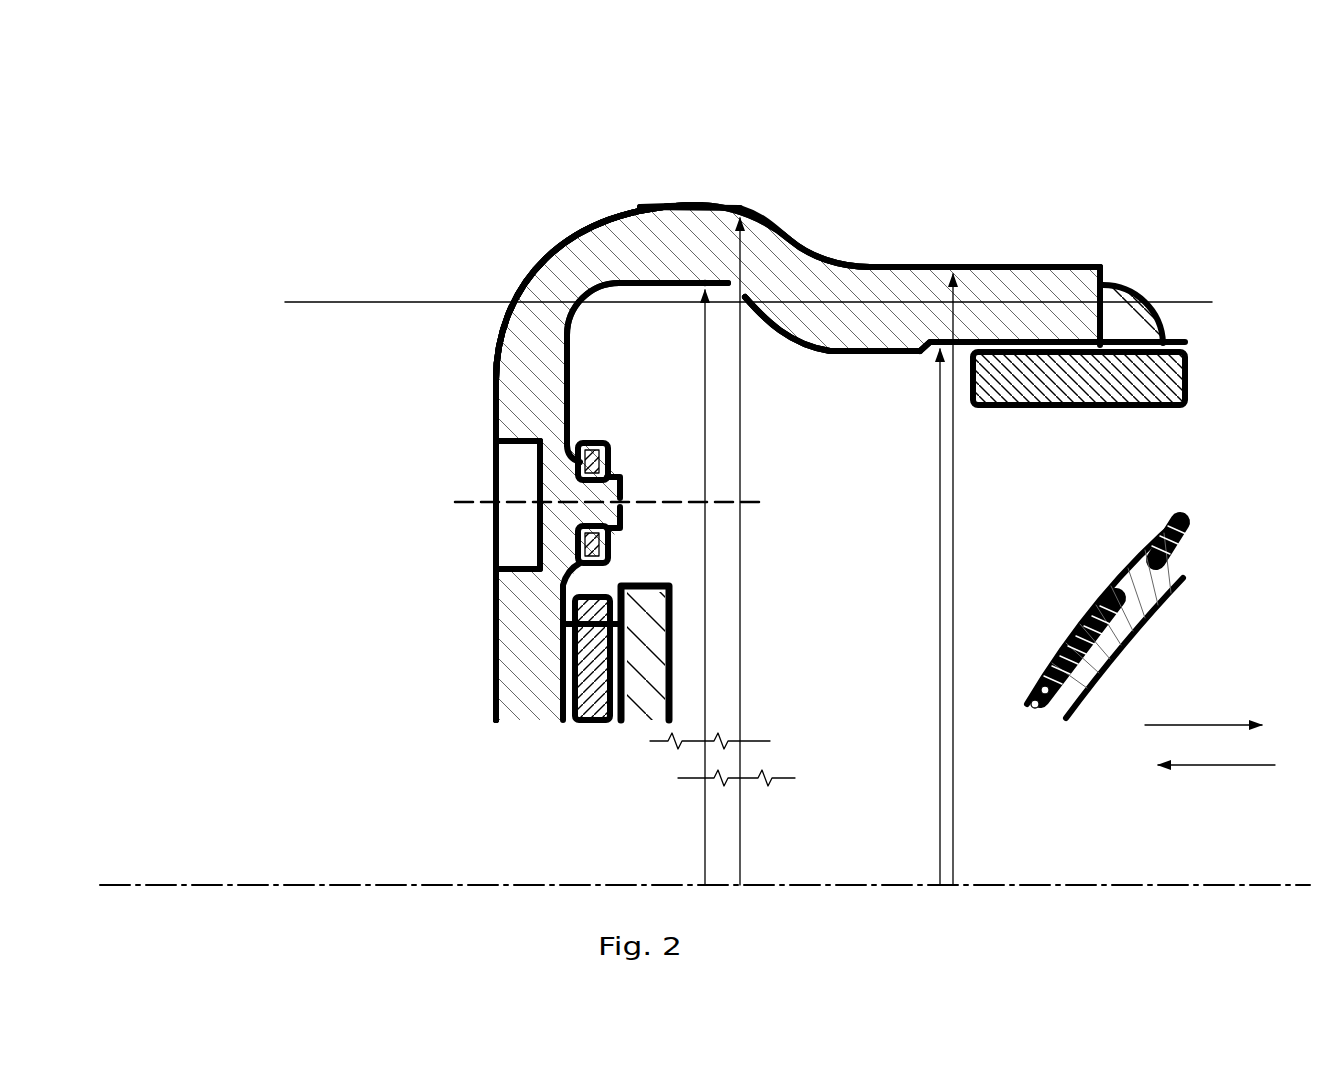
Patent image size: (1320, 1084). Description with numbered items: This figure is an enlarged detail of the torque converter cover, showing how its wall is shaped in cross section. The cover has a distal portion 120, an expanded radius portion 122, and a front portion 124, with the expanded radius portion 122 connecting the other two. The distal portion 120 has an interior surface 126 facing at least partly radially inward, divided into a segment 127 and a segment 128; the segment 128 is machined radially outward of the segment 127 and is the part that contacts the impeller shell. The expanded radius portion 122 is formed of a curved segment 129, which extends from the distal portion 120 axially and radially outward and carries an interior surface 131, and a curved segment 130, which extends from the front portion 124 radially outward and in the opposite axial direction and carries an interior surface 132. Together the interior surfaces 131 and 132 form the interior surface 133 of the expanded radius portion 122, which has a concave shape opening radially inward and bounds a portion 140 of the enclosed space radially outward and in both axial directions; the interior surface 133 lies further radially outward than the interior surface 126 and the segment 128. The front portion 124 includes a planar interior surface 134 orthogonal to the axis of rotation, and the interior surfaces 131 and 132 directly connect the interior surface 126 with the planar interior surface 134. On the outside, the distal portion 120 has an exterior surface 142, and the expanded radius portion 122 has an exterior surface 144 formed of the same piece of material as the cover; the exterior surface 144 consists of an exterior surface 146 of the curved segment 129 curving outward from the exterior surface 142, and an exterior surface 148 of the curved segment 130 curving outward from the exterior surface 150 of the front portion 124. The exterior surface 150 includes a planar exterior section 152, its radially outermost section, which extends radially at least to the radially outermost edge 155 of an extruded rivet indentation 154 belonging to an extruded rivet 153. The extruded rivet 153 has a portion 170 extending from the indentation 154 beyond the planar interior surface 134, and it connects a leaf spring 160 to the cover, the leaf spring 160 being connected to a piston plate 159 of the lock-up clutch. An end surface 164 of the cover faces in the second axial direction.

The distal portion 120 is at (964, 262).
The expanded radius portion 122 is at (636, 200).
The front portion 124 is at (486, 685).
The interior surface 126 is at (893, 360).
The segment 127 is at (912, 356).
The segment 128 is at (1058, 345).
The curved segment 129 is at (758, 232).
The curved segment 130 is at (566, 279).
The interior surface 131 is at (783, 323).
The interior surface 132 is at (580, 322).
The interior surface 133 is at (633, 293).
The planar interior surface 134 is at (592, 395).
The portion of space 140 is at (653, 285).
The exterior surface 142 is at (1012, 266).
The exterior surface 144 is at (700, 196).
The exterior surface 146 is at (797, 232).
The exterior surface 148 is at (520, 283).
The exterior surface 150 is at (486, 625).
The planar exterior section 152 is at (490, 585).
The extruded rivet 153 is at (564, 537).
The extruded rivet indentation 154 is at (512, 533).
The radially outermost edge 155 is at (514, 440).
The piston plate 159 is at (650, 628).
The leaf spring 160 is at (598, 442).
The end surface 164 is at (1128, 290).
The portion of extruded rivet 170 is at (621, 488).